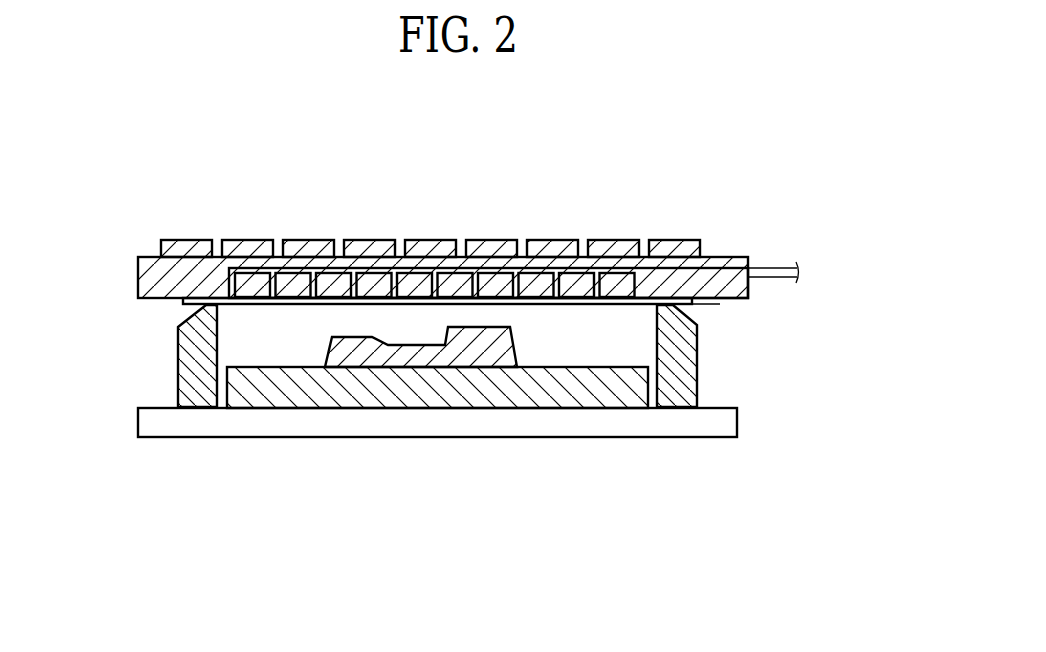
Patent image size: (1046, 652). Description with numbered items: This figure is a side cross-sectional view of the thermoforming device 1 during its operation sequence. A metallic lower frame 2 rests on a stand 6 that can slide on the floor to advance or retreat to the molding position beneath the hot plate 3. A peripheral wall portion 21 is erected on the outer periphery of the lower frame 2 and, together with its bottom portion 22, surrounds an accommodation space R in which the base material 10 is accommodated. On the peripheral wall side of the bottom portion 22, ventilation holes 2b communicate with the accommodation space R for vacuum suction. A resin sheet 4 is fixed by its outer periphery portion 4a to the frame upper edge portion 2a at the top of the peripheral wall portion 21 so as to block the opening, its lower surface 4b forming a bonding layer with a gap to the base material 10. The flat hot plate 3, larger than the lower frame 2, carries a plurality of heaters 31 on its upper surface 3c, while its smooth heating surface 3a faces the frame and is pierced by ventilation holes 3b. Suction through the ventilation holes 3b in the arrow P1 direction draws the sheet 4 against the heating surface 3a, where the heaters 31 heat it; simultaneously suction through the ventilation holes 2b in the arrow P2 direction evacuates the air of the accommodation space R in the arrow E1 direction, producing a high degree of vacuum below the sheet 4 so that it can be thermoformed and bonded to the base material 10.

The thermoforming device 1 is at (783, 232).
The lower frame 2 is at (442, 392).
The frame upper edge portion 2a is at (218, 298).
The ventilation hole 2b is at (220, 403).
The hot plate 3 is at (432, 216).
The heating surface 3a is at (485, 298).
The ventilation holes 3b is at (297, 290).
The upper surface 3c is at (643, 254).
The sheet 4 is at (509, 280).
The outer periphery portion 4a is at (663, 298).
The lower surface 4b is at (567, 298).
The stand 6 is at (737, 423).
The base material 10 is at (375, 337).
The peripheral wall portion 21 is at (178, 366).
The bottom portion 22 is at (346, 398).
The heaters 31 is at (262, 238).
The arrow P1 direction P1 is at (280, 225).
The arrow P2 direction P2 is at (223, 415).
The arrow E1 direction E1 is at (256, 312).
The accommodation space R is at (561, 356).